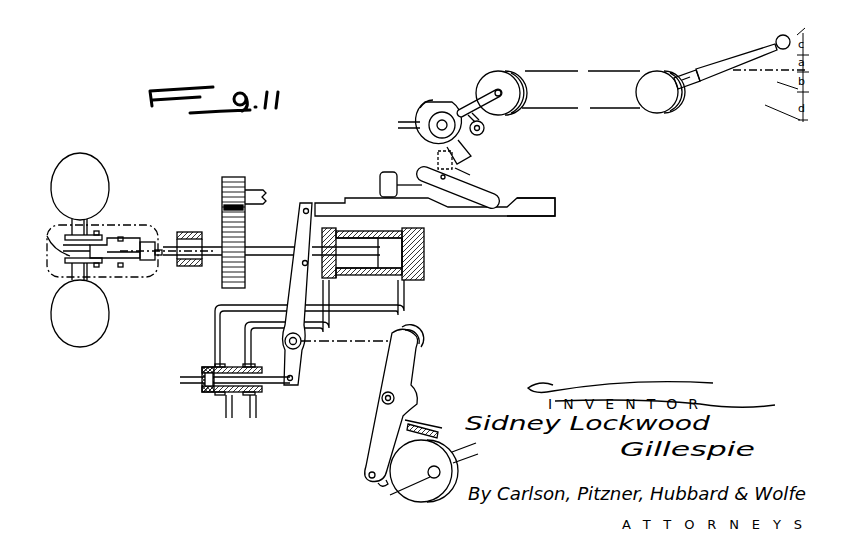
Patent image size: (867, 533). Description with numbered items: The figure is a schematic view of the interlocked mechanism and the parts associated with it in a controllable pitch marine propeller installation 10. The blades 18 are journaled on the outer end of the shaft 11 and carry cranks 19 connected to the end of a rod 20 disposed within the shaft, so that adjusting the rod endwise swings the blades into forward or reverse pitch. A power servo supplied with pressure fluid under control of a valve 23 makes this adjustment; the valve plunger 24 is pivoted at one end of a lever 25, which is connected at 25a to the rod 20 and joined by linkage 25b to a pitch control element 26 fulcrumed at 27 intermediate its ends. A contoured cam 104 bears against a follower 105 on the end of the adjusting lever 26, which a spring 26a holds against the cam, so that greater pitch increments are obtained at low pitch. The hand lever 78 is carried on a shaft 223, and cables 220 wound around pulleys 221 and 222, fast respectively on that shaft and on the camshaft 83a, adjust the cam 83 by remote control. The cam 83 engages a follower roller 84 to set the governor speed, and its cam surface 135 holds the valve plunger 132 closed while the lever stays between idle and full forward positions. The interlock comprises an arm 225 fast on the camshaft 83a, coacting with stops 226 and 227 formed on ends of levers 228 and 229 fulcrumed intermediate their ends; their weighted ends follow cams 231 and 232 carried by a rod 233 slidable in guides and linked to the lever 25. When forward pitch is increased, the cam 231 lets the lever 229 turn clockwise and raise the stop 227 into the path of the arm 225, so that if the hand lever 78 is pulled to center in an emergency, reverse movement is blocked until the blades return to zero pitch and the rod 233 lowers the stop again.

The steering mechanism 10 is at (115, 182).
The shaft 11 is at (184, 238).
The blades 18 is at (94, 170).
The cranks 19 is at (60, 246).
The rod 20 is at (158, 257).
The valve 23 is at (200, 363).
The plunger 24 is at (214, 396).
The lever 25 is at (298, 372).
The connection 25a is at (302, 265).
The linkage 25b is at (349, 329).
The pitch control element 26 is at (412, 371).
The spring 26a is at (398, 423).
The fulcrum 27 is at (382, 399).
The hand lever 78 is at (738, 56).
The cam 83 is at (462, 104).
The camshaft 83a is at (493, 90).
The follower roller 84 is at (486, 126).
The cam 104 is at (391, 496).
The follower 105 is at (378, 486).
The plunger 132 is at (406, 121).
The cam surface 135 is at (421, 107).
The cables 220 is at (574, 71).
The pulley 221 is at (505, 76).
The pulley 222 is at (655, 110).
The shaft 223 is at (690, 81).
The arm 225 is at (470, 151).
The stop 226 is at (467, 168).
The stop 227 is at (437, 159).
The lever 228 is at (385, 174).
The lever 229 is at (497, 193).
The cam 231 is at (519, 201).
The cam 232 is at (458, 201).
The rod 233 is at (337, 202).